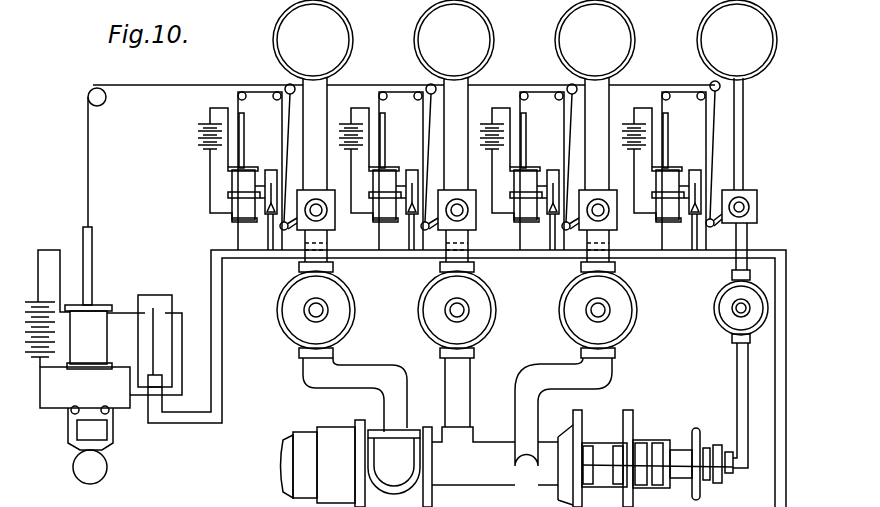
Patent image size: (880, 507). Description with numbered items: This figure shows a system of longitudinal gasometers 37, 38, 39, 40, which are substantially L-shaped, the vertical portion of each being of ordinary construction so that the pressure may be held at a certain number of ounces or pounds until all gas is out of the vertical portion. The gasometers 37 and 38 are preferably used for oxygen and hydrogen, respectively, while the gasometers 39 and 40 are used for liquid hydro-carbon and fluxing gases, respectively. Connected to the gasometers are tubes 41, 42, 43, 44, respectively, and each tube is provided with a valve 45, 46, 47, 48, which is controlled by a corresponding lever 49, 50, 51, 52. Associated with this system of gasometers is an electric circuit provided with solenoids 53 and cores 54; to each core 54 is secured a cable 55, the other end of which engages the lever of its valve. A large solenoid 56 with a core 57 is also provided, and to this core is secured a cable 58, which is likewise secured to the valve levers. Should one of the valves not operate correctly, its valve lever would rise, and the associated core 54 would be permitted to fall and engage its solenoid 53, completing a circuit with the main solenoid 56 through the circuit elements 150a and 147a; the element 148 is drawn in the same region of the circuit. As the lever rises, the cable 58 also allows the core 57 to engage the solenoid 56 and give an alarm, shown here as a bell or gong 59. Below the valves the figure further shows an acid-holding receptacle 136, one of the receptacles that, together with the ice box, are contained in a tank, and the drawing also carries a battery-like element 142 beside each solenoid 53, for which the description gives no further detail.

The gasometer 37 is at (313, 40).
The gasometer 38 is at (454, 40).
The gasometer 39 is at (595, 40).
The gasometer 40 is at (737, 40).
The tube 41 is at (315, 134).
The tube 42 is at (456, 134).
The tube 43 is at (597, 134).
The tube 44 is at (741, 145).
The valve 45 is at (325, 227).
The valve 46 is at (466, 225).
The valve 47 is at (607, 225).
The valve 48 is at (743, 213).
The lever 49 is at (286, 168).
The lever 50 is at (427, 168).
The lever 51 is at (572, 167).
The lever 52 is at (714, 164).
The solenoid 53 is at (241, 214).
The core 54 is at (245, 145).
The cable 55 is at (263, 93).
The large solenoid 56 is at (90, 327).
The core 57 is at (92, 252).
The cable 58 is at (174, 87).
The bell or gong 59 is at (82, 476).
The acid-holding receptacle 136 is at (338, 298).
The battery 142 is at (626, 105).
The circuit element 147a is at (157, 293).
The battery 148 is at (35, 360).
The circuit element 150a is at (222, 364).